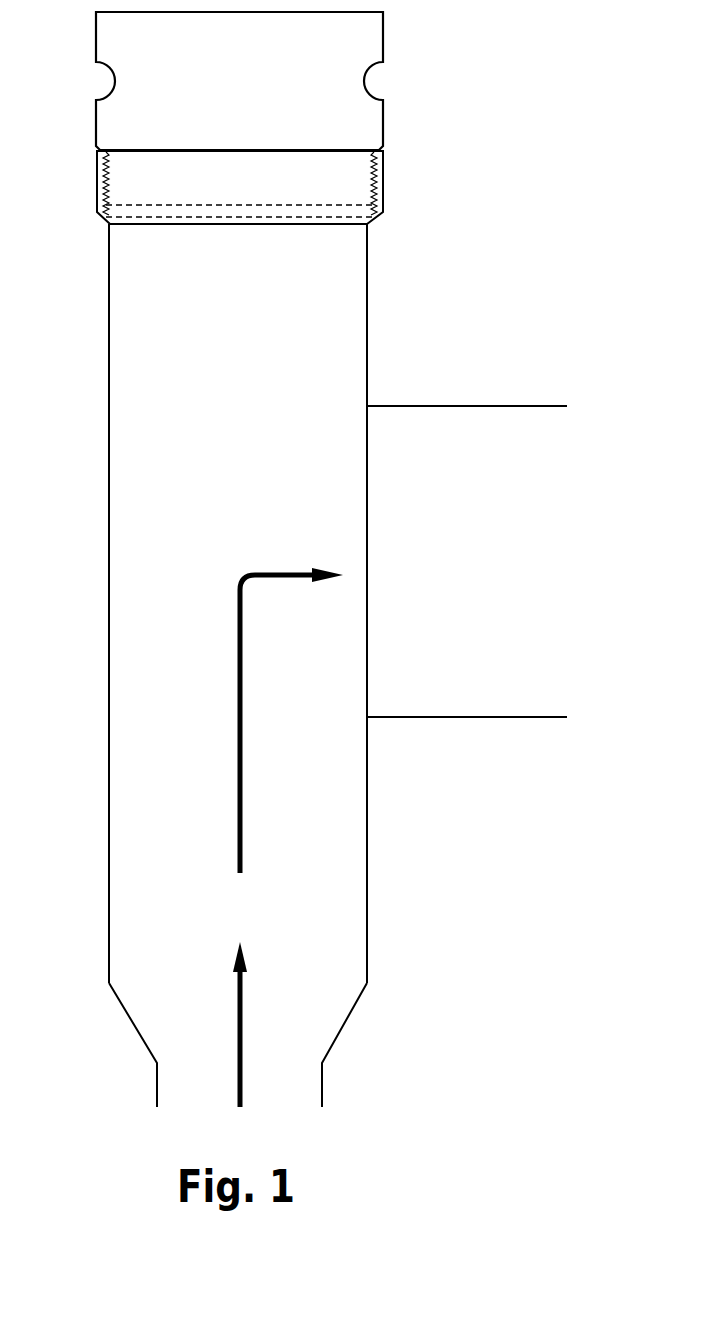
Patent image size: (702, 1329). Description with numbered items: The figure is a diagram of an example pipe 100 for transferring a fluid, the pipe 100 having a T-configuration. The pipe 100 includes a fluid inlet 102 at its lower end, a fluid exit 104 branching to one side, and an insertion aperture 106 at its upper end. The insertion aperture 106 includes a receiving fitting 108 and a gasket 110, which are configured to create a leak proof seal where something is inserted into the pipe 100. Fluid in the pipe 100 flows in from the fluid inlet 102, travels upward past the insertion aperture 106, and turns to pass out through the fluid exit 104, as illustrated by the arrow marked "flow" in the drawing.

The pipe 100 is at (180, 428).
The fluid inlet 102 is at (360, 951).
The fluid exit 104 is at (521, 500).
The insertion aperture 106 is at (210, 322).
The receiving fitting 108 is at (383, 125).
The gasket 110 is at (368, 222).